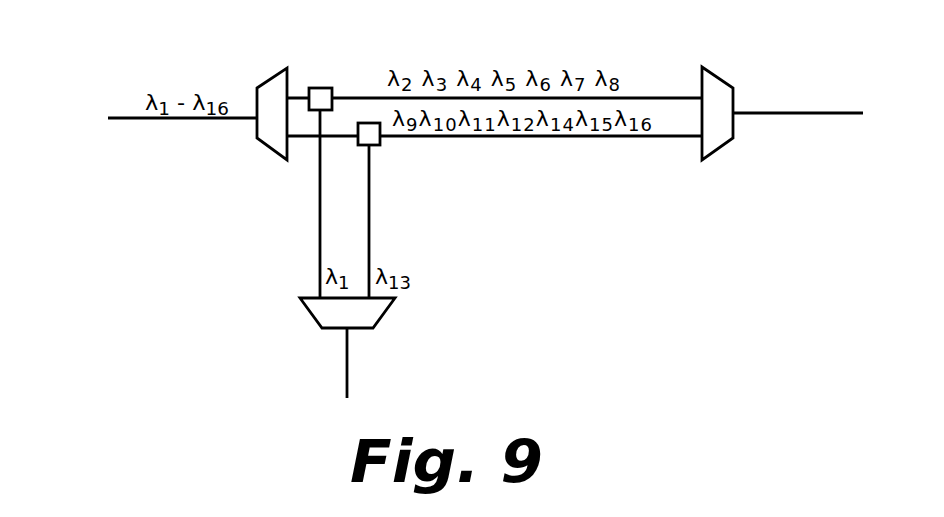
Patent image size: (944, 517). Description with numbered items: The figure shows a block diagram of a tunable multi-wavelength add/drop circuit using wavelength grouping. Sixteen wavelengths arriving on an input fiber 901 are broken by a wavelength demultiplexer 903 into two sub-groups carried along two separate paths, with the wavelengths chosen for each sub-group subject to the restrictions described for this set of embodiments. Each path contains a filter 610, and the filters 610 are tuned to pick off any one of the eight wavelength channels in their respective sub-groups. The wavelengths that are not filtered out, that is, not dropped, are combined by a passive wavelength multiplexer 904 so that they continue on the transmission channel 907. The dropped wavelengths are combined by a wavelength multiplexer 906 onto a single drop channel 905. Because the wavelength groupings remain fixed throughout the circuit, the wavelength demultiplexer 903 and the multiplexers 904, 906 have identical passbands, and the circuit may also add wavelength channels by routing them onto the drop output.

The input fiber 901 is at (162, 122).
The wavelength demultiplexer 903 is at (273, 145).
The filter 610 is at (318, 88).
The passive wavelength multiplexer 904 is at (727, 87).
The transmission channel 907 is at (815, 112).
The wavelength multiplexer 906 is at (383, 315).
The drop channel 905 is at (347, 357).